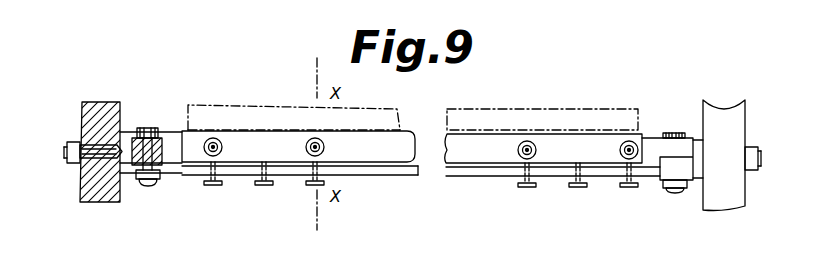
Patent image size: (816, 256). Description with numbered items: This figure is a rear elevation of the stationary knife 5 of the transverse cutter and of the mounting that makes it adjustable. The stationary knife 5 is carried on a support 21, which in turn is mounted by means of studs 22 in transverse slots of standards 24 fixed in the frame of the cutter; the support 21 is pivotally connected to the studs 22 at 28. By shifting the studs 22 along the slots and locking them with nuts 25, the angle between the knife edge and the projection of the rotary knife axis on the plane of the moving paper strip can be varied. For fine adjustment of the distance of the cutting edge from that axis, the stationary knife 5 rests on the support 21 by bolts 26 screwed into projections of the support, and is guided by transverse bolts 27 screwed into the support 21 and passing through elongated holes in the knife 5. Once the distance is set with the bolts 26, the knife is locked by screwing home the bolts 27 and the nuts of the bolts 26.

The stationary knife 5 is at (381, 147).
The support 21 is at (655, 172).
The studs 22 is at (99, 162).
The standards 24 is at (740, 204).
The nuts 25 is at (78, 143).
The bolts 26 is at (527, 188).
The transverse bolts 27 is at (537, 150).
The pivotal connection 28 is at (148, 128).